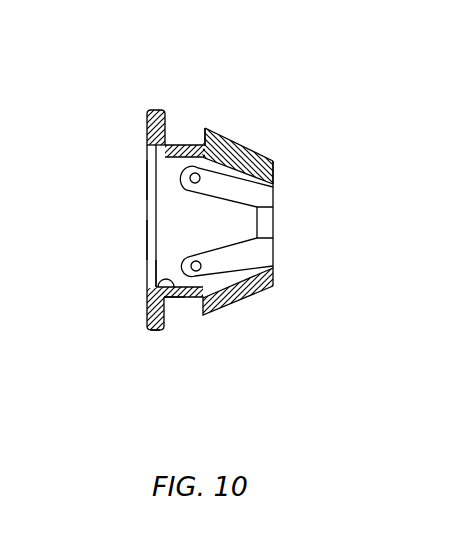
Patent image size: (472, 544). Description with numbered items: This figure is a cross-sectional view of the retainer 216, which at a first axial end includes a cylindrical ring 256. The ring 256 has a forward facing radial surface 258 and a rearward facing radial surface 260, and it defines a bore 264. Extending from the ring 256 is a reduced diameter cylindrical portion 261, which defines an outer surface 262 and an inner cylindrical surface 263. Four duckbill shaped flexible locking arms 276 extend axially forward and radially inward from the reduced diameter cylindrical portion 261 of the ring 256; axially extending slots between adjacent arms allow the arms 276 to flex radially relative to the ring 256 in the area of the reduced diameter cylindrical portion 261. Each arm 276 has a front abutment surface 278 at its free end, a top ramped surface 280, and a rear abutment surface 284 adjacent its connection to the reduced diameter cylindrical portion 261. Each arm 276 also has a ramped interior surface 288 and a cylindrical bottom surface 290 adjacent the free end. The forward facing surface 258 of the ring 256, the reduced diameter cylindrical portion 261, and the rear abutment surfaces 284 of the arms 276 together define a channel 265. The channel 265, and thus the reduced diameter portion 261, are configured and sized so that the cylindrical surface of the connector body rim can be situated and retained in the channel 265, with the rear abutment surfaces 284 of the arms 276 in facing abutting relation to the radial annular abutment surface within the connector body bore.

The retainer 216 is at (239, 87).
The cylindrical ring 256 is at (155, 336).
The forward facing radial surface 258 is at (175, 300).
The rearward facing radial surface 260 is at (150, 308).
The reduced diameter cylindrical portion 261 is at (183, 169).
The outer surface 262 is at (186, 297).
The inner cylindrical surface 263 is at (156, 266).
The bore 264 is at (172, 239).
The channel 265 is at (179, 143).
The flexible locking arm 276 is at (233, 128).
The front abutment surface 278 is at (274, 169).
The top ramped surface 280 is at (253, 143).
The rear abutment surface 284 is at (197, 143).
The ramped interior surface 288 is at (222, 181).
The cylindrical bottom surface 290 is at (265, 212).